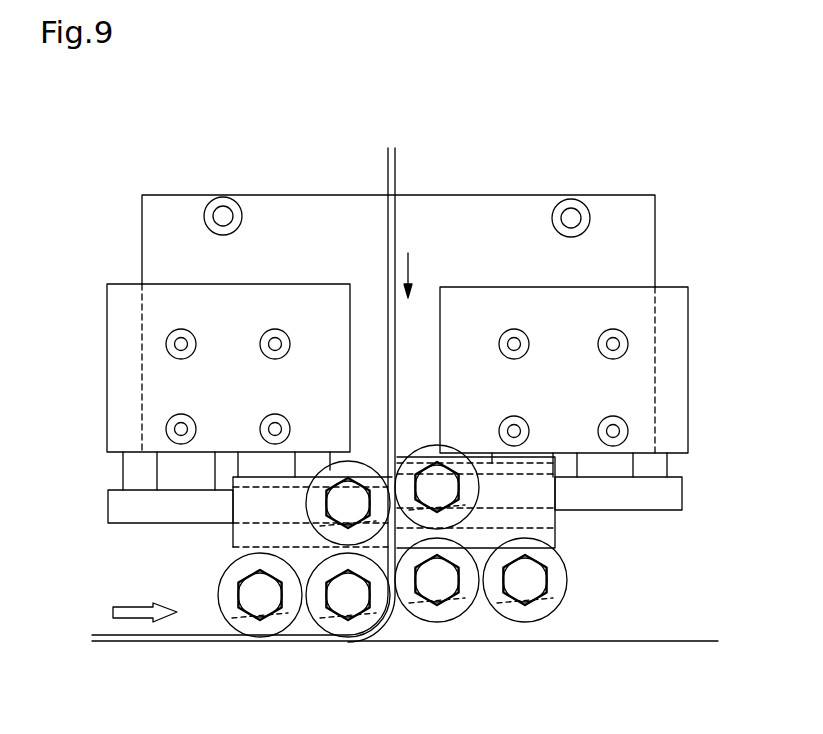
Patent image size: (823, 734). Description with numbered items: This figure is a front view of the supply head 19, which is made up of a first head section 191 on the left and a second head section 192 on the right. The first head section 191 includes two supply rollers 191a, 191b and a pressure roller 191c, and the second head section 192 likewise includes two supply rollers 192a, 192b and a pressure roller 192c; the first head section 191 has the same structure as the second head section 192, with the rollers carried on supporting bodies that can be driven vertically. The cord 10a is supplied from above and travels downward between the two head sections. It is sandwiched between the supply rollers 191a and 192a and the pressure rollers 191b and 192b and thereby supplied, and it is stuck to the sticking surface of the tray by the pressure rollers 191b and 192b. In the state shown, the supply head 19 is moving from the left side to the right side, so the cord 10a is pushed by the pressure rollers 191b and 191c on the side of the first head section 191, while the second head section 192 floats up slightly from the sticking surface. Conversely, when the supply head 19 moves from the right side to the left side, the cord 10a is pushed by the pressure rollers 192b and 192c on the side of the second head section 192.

The supply head 19 is at (680, 193).
The cord 10a is at (386, 226).
The first head section 191 is at (237, 531).
The supply roller 191a is at (338, 462).
The pressure roller 191b is at (338, 632).
The pressure roller 191c is at (206, 568).
The second head section 192 is at (547, 531).
The supply roller 192a is at (453, 451).
The pressure roller 192b is at (452, 612).
The pressure roller 192c is at (542, 610).